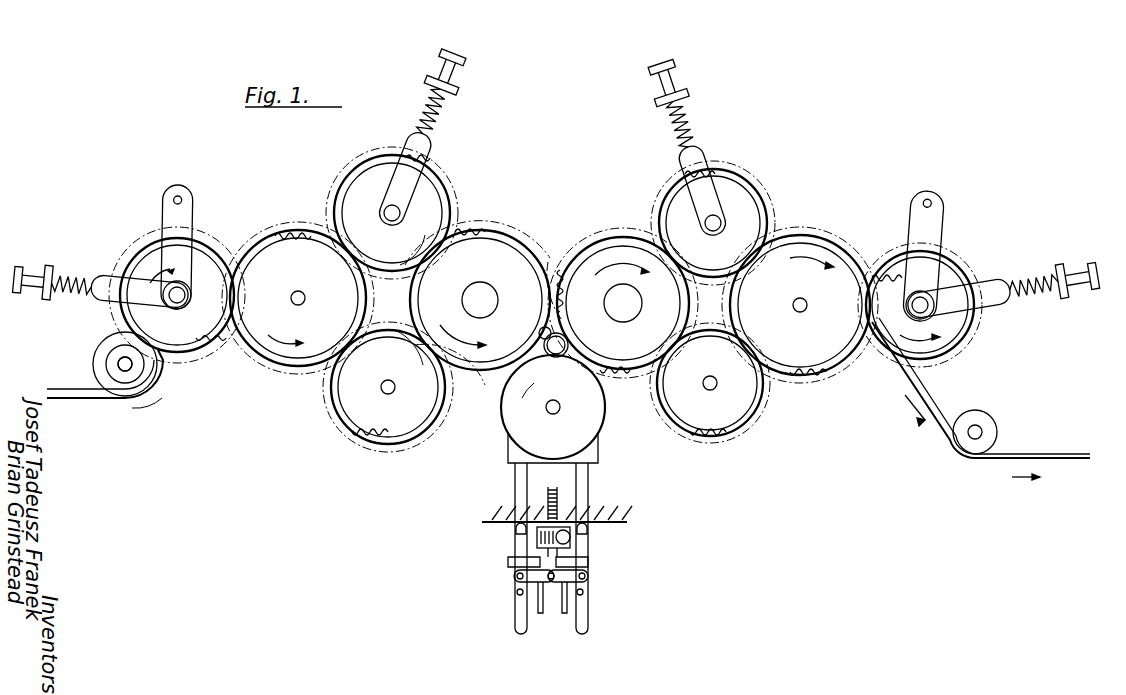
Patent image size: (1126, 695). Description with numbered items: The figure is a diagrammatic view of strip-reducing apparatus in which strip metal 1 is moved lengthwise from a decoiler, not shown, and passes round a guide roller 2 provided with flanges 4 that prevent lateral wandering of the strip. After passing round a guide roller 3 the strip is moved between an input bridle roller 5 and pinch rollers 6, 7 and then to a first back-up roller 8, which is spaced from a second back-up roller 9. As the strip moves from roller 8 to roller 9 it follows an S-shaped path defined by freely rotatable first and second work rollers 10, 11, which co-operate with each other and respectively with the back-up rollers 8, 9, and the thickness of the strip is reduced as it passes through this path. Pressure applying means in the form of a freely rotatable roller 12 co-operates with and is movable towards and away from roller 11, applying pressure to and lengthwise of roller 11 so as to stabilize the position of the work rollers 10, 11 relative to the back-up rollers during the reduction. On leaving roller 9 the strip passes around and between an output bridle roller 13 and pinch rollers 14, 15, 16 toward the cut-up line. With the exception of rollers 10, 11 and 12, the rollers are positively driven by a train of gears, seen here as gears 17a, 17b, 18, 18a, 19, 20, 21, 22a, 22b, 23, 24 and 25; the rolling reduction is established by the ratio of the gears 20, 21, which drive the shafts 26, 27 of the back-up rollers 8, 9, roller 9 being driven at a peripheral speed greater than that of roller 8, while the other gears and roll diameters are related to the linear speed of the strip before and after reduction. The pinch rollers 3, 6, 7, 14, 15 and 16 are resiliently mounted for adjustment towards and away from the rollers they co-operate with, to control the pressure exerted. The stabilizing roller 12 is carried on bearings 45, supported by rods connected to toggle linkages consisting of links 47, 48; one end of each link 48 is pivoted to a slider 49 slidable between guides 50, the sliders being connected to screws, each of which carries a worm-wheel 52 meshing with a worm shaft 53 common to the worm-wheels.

The strip metal 1 is at (72, 393).
The guide roller 2 is at (110, 356).
The guide roller 3 is at (152, 258).
The flanges 4 is at (108, 348).
The input bridle roller 5 is at (303, 250).
The pinch roller 6 is at (356, 191).
The pinch roller 7 is at (356, 402).
The first back-up roller 8 is at (472, 355).
The second back-up roller 9 is at (616, 246).
The first work roller 10 is at (540, 331).
The second work roller 11 is at (546, 344).
The pressure applying roller 12 is at (598, 418).
The output bridle roller 13 is at (855, 330).
The pinch roller 14 is at (738, 200).
The pinch roller 15 is at (732, 411).
The pinch roller 16 is at (960, 340).
The gear 17a is at (222, 345).
The gear 17b is at (252, 250).
The gear 18 is at (328, 393).
The gear 18a is at (444, 188).
The gear 19 is at (565, 270).
The gear 20 is at (534, 228).
The gear 21 is at (590, 230).
The gear 22a is at (618, 364).
The gear 22b is at (770, 200).
The gear 23 is at (724, 432).
The gear 24 is at (840, 366).
The gear 25 is at (975, 326).
The shaft 26 is at (479, 286).
The shaft 27 is at (631, 309).
The bearings 45 is at (600, 456).
The link 47 is at (520, 548).
The link 48 is at (514, 576).
The slider 49 is at (574, 564).
The guides 50 is at (540, 604).
The worm-wheel 52 is at (570, 534).
The worm shaft 53 is at (545, 528).